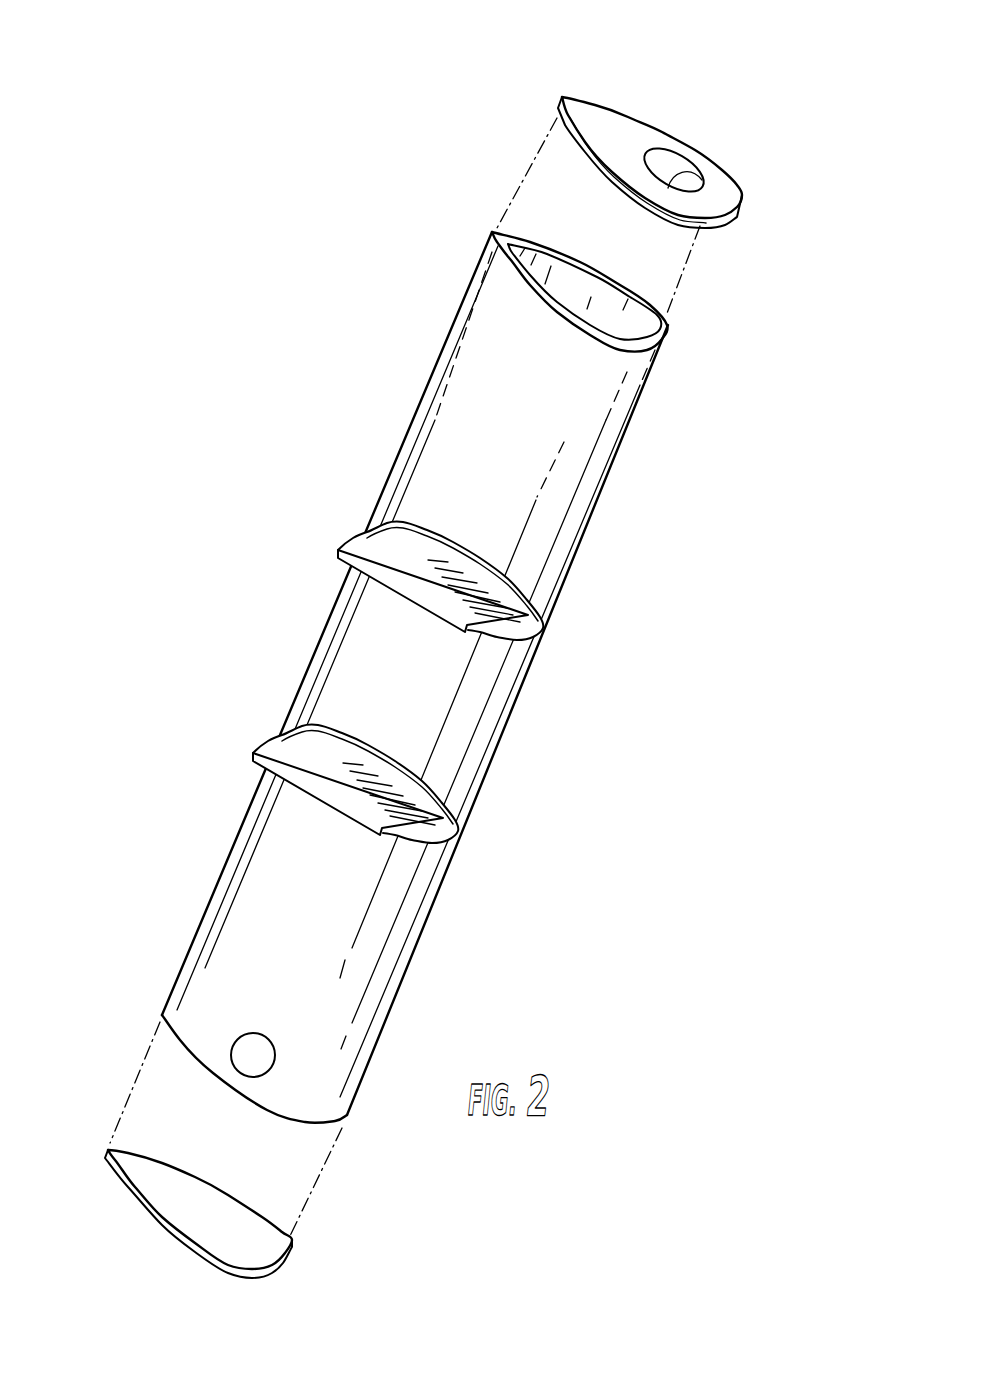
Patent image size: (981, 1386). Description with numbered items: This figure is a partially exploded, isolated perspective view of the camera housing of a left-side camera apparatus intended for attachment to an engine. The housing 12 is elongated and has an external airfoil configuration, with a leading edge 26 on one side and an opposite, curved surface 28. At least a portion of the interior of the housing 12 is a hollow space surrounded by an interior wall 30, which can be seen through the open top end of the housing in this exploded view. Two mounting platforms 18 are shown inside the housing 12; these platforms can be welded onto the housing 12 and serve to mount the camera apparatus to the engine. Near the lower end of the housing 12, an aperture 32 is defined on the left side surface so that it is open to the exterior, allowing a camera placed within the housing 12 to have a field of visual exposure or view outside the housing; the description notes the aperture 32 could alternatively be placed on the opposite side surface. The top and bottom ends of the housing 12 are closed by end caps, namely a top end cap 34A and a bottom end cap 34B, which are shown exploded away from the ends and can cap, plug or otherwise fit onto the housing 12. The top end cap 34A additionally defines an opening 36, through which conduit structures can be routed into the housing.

The housing 12 is at (448, 677).
The mounting platforms 18 is at (300, 765).
The leading edge 26 is at (447, 328).
The curved surface 28 is at (652, 363).
The interior wall 30 is at (622, 308).
The aperture 32 is at (233, 1062).
The top end cap 34A is at (666, 119).
The bottom end cap 34B is at (257, 1247).
The opening 36 is at (672, 185).